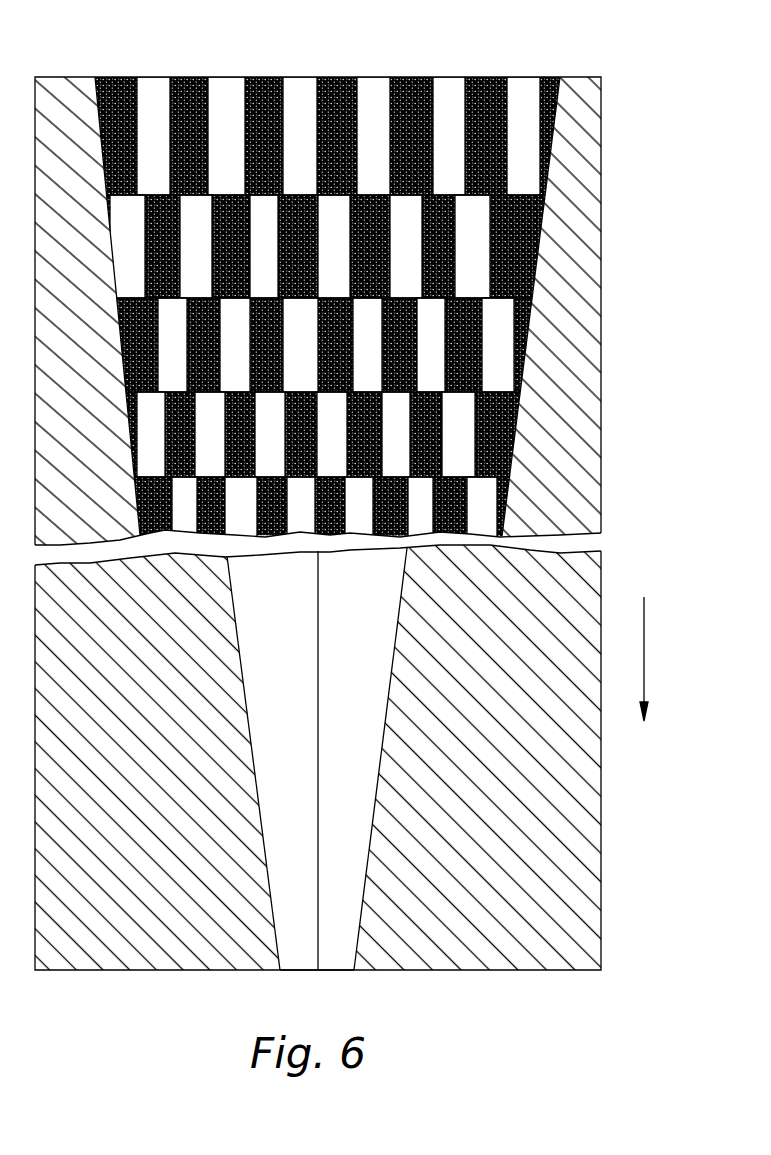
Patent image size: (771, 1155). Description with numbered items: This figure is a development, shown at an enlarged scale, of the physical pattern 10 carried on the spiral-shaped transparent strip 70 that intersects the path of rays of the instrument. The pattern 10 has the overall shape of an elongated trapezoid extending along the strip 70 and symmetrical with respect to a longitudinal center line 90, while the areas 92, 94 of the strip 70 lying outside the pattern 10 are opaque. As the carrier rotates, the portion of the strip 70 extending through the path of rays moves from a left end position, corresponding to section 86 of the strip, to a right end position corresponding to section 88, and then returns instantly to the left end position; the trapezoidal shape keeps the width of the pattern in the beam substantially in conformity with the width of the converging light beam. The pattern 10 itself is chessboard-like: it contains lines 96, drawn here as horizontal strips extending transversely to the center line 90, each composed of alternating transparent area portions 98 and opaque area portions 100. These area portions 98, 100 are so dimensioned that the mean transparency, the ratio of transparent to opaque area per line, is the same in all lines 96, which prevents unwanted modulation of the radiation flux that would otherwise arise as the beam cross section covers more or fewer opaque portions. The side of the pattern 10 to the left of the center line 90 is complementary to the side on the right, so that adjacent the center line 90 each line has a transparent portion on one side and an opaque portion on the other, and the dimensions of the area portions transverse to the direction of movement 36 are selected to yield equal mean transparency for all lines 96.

The physical pattern 10 is at (538, 503).
The direction of movement 36 is at (644, 660).
The spiral-shaped transparent strip 70 is at (578, 929).
The section of the strip 86 is at (332, 972).
The section of the strip 88 is at (226, 77).
The longitudinal center line 90 is at (320, 722).
The opaque area of the strip 92 is at (146, 690).
The opaque area of the strip 94 is at (505, 690).
The lines 96 is at (96, 138).
The transparent area portions 98 is at (147, 92).
The opaque area portions 100 is at (483, 77).